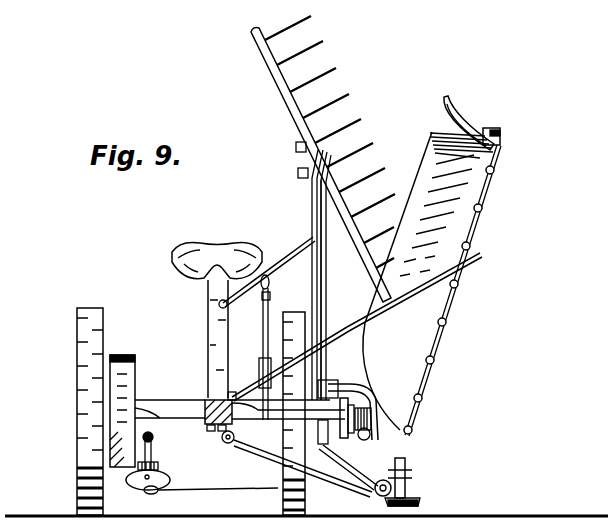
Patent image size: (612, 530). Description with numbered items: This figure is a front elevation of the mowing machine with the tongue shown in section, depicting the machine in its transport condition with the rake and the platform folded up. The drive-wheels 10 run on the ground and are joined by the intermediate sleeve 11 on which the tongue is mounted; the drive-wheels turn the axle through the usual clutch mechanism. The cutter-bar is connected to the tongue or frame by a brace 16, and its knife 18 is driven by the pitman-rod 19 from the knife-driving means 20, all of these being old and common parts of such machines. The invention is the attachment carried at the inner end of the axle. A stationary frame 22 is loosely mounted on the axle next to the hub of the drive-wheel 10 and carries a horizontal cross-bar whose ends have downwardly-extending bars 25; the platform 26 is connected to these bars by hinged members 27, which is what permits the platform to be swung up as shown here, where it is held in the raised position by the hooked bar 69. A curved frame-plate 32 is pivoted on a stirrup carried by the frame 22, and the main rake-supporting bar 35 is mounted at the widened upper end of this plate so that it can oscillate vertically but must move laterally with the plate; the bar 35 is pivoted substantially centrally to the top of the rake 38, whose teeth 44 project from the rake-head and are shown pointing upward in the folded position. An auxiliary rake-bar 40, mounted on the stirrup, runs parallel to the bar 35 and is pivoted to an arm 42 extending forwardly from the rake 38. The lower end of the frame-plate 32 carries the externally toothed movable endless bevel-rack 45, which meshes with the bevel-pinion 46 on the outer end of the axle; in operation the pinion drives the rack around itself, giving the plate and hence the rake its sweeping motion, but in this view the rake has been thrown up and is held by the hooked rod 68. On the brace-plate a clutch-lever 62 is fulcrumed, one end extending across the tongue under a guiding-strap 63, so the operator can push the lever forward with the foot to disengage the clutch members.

The drive-wheel 10 is at (104, 330).
The intermediate sleeve 11 is at (167, 405).
The brace 16 is at (251, 456).
The knife 18 is at (445, 340).
The pitman-rod 19 is at (203, 493).
The knife-driving means 20 is at (139, 485).
The stationary frame 22 is at (321, 441).
The downwardly-extending bar 25 is at (343, 460).
The platform 26 is at (428, 281).
The hinged member 27 is at (492, 134).
The frame-plate 32 is at (372, 387).
The main rake-supporting bar 35 is at (327, 258).
The rake 38 is at (281, 97).
The auxiliary rake-bar 40 is at (312, 278).
The arm 42 is at (306, 163).
The rake teeth 44 is at (314, 134).
The movable endless bevel-rack 45 is at (358, 430).
The bevel-pinion 46 is at (374, 423).
The clutch-lever 62 is at (198, 400).
The guiding-strap 63 is at (214, 400).
The hooked rod 68 is at (290, 256).
The hooked bar 69 is at (360, 320).